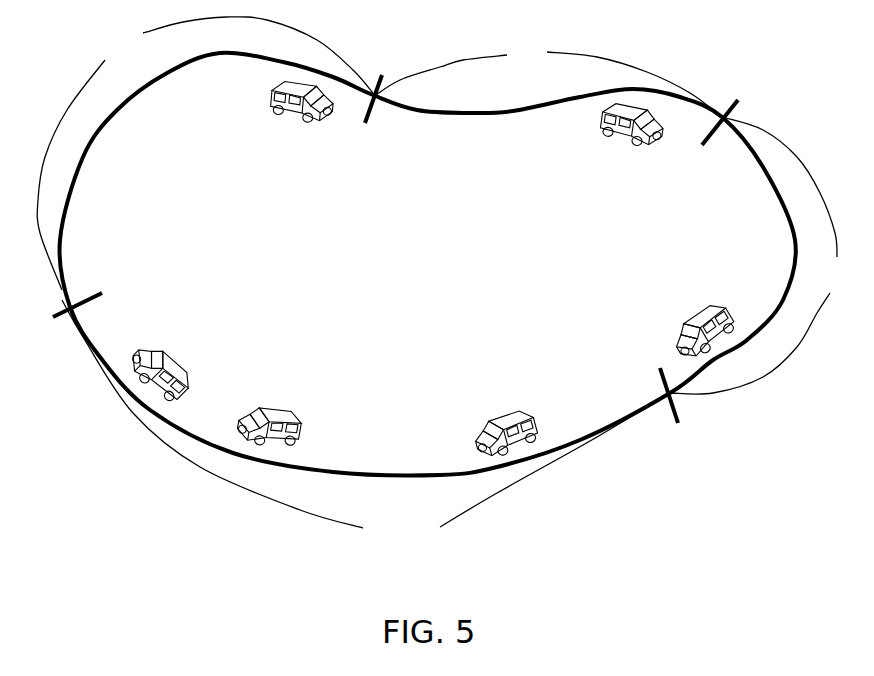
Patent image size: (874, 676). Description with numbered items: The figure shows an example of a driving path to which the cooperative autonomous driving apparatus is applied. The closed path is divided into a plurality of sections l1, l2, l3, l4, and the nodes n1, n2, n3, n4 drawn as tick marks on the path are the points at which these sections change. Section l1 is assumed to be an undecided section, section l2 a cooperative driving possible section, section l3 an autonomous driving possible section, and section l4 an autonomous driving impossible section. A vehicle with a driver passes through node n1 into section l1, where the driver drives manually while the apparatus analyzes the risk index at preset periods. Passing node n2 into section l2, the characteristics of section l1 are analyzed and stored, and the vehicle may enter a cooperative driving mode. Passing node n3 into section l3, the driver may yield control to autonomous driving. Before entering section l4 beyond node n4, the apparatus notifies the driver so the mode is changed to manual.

The node n1 is at (736, 121).
The node n2 is at (388, 106).
The node n3 is at (60, 302).
The node n4 is at (662, 408).
The section l1 is at (547, 79).
The section l2 is at (205, 153).
The section l3 is at (366, 421).
The section l4 is at (756, 255).